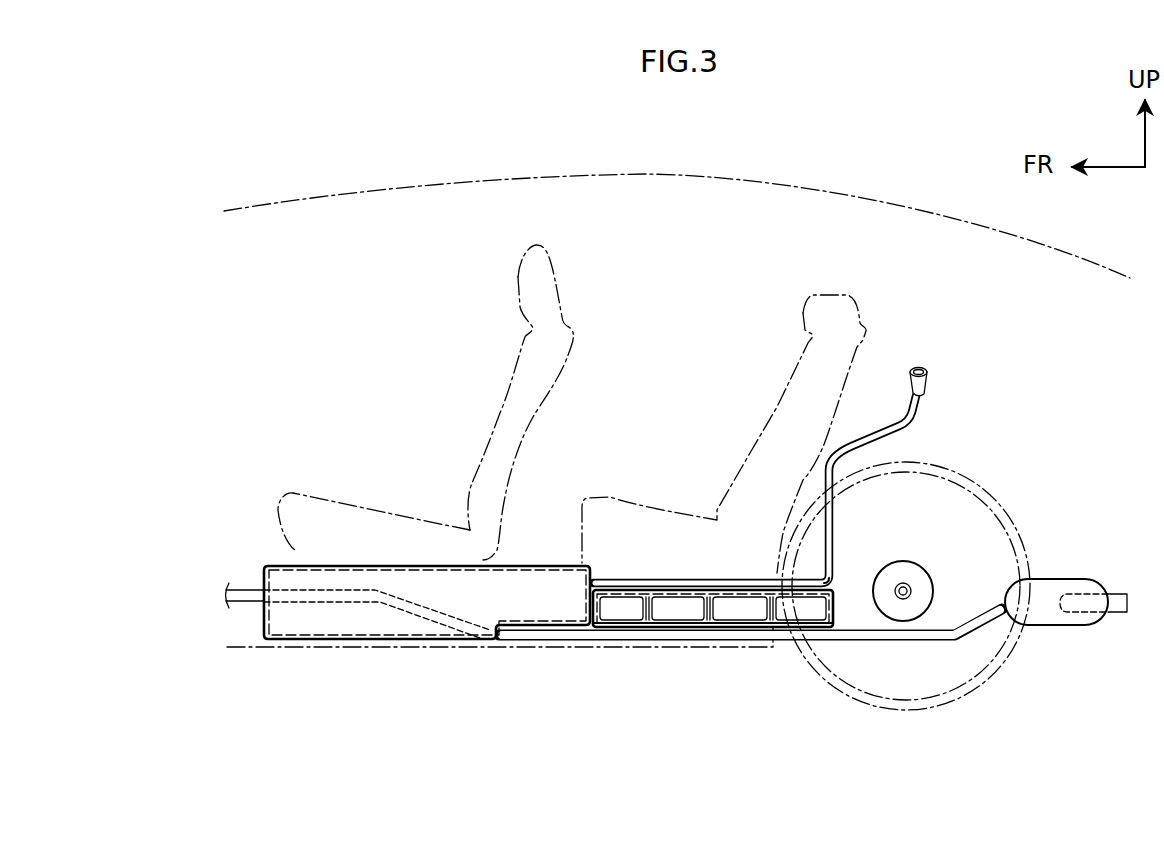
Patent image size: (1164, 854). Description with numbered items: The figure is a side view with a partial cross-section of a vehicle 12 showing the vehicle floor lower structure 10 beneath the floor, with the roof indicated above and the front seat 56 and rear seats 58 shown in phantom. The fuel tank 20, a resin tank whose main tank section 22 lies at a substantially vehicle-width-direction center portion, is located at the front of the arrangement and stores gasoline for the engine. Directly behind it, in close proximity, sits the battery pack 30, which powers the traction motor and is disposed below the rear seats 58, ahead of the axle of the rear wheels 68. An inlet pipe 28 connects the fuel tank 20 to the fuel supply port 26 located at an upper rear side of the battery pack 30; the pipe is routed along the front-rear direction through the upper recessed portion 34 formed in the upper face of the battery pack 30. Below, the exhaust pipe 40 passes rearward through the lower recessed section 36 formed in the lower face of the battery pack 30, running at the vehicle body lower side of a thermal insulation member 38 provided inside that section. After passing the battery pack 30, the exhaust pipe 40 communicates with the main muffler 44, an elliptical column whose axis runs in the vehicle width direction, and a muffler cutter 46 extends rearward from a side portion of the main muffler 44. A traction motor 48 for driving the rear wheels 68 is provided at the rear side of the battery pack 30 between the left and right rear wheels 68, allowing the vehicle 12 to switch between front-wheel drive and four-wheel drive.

The vehicle floor lower structure 10 is at (284, 674).
The vehicle 12 is at (681, 176).
The fuel tank 20 is at (396, 609).
The main tank section 22 is at (376, 648).
The fuel supply port 26 is at (929, 384).
The inlet pipe 28 is at (863, 420).
The battery pack 30 is at (840, 590).
The upper recessed portion 34 is at (713, 606).
The lower recessed section 36 is at (749, 630).
The thermal insulation member 38 is at (668, 630).
The exhaust pipe 40 is at (539, 632).
The main muffler 44 is at (1052, 580).
The muffler cutter 46 is at (1117, 614).
The traction motor 48 is at (917, 562).
The front seat 56 is at (515, 275).
The rear seats 58 is at (803, 313).
The rear wheels 68 is at (937, 710).